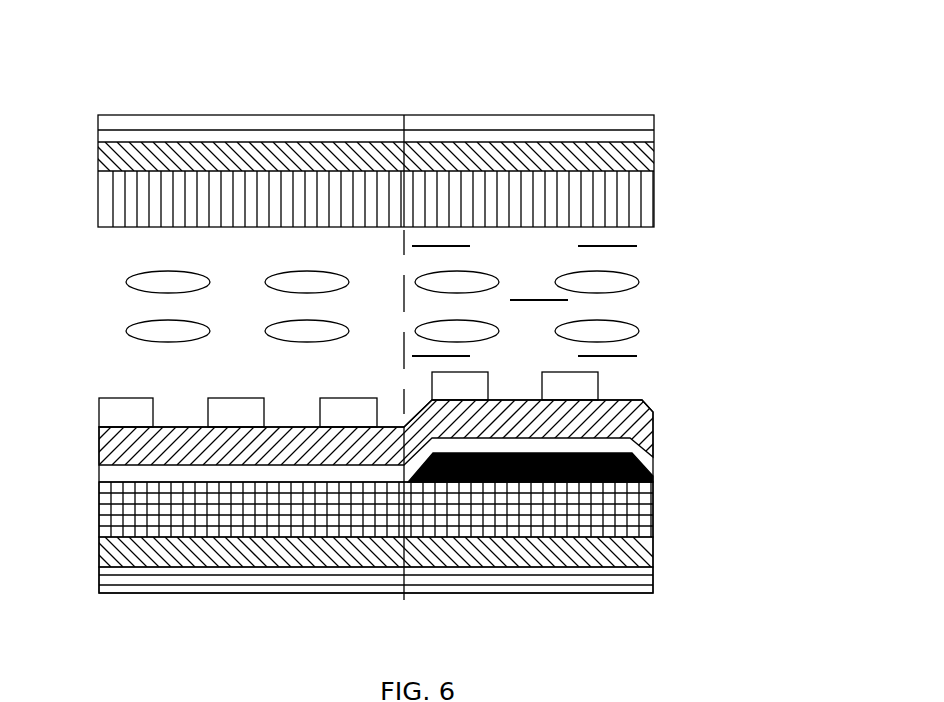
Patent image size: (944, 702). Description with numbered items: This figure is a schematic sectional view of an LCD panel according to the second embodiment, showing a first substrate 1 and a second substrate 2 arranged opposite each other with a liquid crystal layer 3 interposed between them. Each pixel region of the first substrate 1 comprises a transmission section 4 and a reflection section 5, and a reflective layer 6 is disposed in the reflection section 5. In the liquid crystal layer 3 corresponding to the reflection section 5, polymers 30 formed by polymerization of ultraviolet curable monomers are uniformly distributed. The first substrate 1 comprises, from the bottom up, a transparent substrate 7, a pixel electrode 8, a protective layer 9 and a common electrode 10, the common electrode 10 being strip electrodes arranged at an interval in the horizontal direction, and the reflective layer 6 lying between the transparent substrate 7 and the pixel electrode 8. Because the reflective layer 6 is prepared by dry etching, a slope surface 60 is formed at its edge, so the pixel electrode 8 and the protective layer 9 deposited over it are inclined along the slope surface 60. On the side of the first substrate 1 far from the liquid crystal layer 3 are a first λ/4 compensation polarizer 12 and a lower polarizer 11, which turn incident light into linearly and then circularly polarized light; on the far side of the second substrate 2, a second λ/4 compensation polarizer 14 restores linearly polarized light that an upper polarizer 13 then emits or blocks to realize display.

The first substrate 1 is at (400, 505).
The second substrate 2 is at (418, 169).
The liquid crystal layer 3 is at (597, 308).
The transmission section 4 is at (264, 80).
The reflection section 5 is at (543, 80).
The reflective layer 6 is at (521, 482).
The transparent substrate 7 is at (99, 508).
The pixel electrode 8 is at (99, 471).
The protective layer 9 is at (655, 424).
The common electrode 10 is at (99, 412).
The lower polarizer 11 is at (99, 580).
The first λ/4 compensation polarizer 12 is at (655, 553).
The upper polarizer 13 is at (654, 131).
The second λ/4 compensation polarizer 14 is at (98, 157).
The polymers 30 is at (613, 246).
The slope surface 60 is at (655, 468).